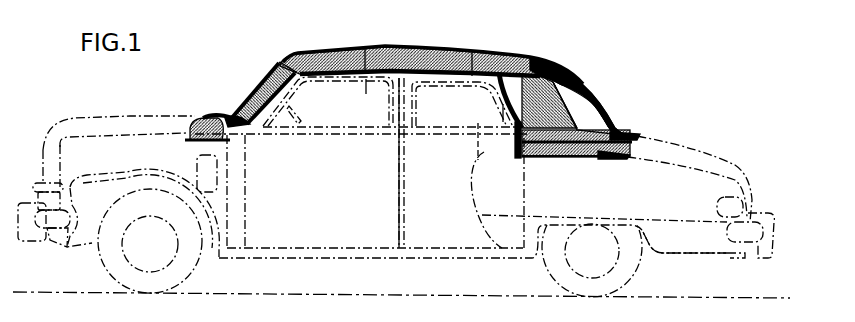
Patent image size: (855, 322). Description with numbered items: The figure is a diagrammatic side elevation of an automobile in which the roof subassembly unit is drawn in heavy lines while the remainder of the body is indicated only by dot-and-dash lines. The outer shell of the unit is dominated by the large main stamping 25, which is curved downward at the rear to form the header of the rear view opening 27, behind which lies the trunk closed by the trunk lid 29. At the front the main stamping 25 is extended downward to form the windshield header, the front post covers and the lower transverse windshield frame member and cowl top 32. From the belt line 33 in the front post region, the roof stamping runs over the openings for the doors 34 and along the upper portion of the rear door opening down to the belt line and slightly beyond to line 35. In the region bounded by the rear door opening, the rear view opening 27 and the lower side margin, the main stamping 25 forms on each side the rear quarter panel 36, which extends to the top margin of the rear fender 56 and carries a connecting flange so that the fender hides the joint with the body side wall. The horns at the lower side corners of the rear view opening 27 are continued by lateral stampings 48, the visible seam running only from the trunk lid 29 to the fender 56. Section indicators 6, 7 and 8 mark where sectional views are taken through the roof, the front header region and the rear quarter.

The section line 6- 6 is at (490, 65).
The section line 7- 7 is at (354, 61).
The section line 8- 8 is at (557, 68).
The main stamping 25 is at (419, 48).
The rear view opening 27 is at (597, 120).
The trunk lid 29 is at (680, 135).
The lower transverse windshield frame member and cowl top 32 is at (207, 116).
The belt line 33 is at (286, 137).
The doors 34 is at (380, 147).
The line 35 is at (577, 158).
The rear quarter panel 36 is at (553, 112).
The lateral stamping 48 is at (697, 163).
The rear fender 56 is at (680, 208).